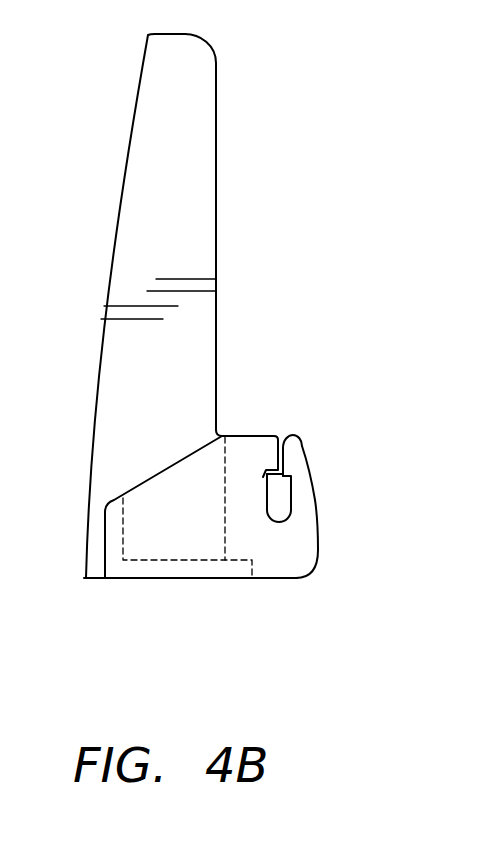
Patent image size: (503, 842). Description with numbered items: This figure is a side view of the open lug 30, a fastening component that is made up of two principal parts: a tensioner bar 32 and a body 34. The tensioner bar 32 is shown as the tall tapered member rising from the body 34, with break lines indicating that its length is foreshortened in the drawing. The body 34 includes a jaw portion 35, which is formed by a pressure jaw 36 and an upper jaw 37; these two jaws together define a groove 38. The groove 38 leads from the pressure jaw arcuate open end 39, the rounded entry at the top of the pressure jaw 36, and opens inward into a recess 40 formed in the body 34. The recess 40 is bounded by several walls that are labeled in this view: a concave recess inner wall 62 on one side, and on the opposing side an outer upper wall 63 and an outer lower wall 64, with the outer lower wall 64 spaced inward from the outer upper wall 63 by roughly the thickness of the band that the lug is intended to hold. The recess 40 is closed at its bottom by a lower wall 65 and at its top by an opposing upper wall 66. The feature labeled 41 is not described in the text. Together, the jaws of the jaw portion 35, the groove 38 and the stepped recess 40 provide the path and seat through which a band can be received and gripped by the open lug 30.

The open lug 30 is at (70, 503).
The tensioner bar 32 is at (195, 138).
The body 34 is at (298, 580).
The jaw portion 35 is at (232, 432).
The pressure jaw 36 is at (306, 447).
The upper jaw 37 is at (235, 457).
The groove 38 is at (272, 453).
The pressure jaw arcuate open end 39 is at (293, 440).
The recess 40 is at (289, 522).
The seal side wall 41 is at (309, 467).
The concave recess inner wall 62 is at (277, 526).
The outer upper wall 63 is at (266, 477).
The outer lower wall 64 is at (291, 480).
The lower wall 65 is at (296, 507).
The upper wall 66 is at (267, 508).